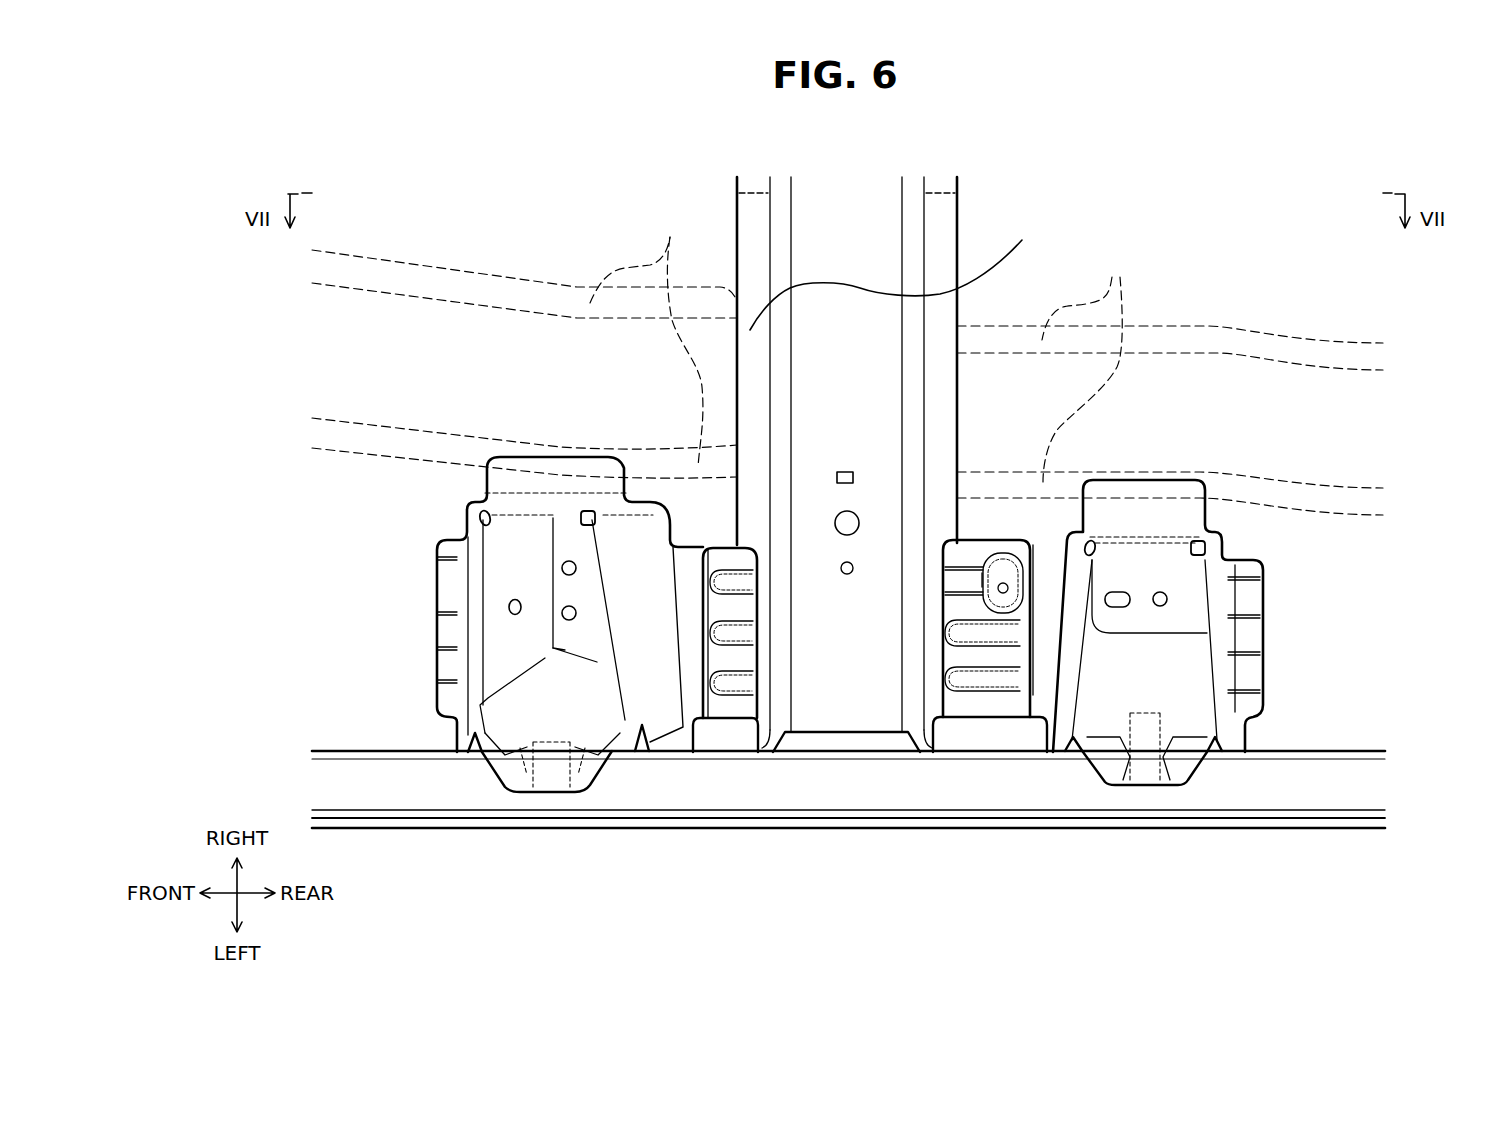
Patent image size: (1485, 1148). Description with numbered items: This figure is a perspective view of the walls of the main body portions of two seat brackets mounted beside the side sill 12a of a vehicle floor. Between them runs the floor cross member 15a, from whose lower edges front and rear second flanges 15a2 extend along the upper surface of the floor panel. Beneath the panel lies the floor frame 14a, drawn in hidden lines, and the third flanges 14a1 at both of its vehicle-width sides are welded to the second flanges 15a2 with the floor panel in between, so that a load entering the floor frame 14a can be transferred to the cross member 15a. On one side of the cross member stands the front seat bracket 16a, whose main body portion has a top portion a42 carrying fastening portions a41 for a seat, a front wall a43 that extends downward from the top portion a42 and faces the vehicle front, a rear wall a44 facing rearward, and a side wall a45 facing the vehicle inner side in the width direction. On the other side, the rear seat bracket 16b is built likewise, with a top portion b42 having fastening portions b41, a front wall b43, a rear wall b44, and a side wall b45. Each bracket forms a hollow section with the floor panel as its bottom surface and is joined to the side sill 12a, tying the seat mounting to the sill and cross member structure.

The side sill 12a is at (410, 790).
The floor frame 14a is at (368, 352).
The third flange 14a1 is at (871, 345).
The floor cross member 15a is at (847, 210).
The second flange 15a2 is at (940, 263).
The front seat bracket 16a is at (573, 648).
The rear seat bracket 16b is at (1187, 613).
The fastening portion a41 is at (562, 568).
The top portion a42 is at (515, 530).
The front wall a43 is at (472, 634).
The rear wall a44 is at (647, 640).
The side wall a45 is at (560, 512).
The fastening portion b41 is at (1195, 583).
The top portion b42 is at (1167, 560).
The front wall b43 is at (1075, 628).
The rear wall b44 is at (1217, 598).
The side wall b45 is at (1128, 537).